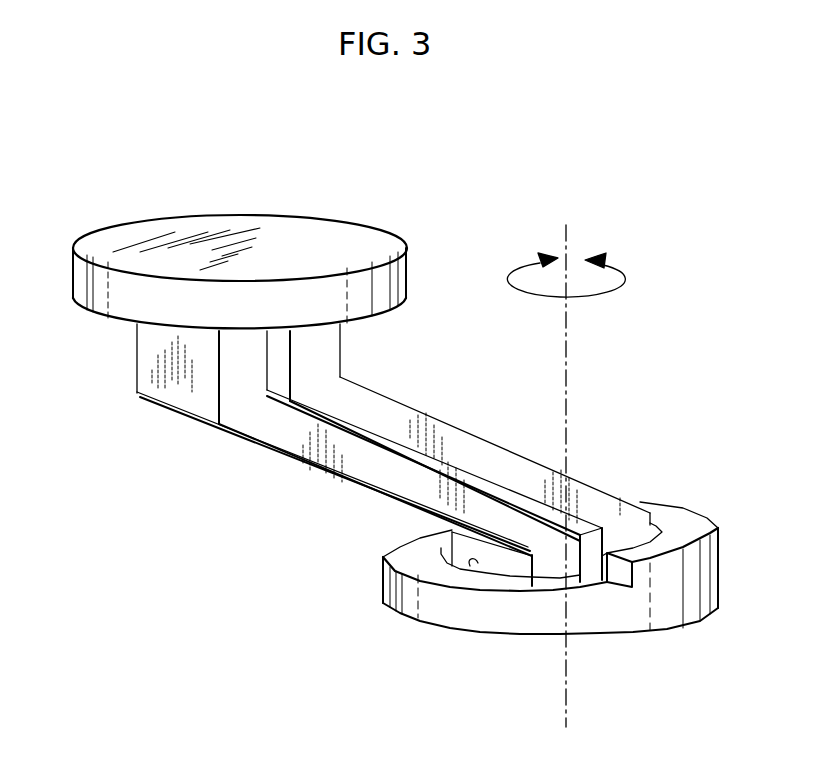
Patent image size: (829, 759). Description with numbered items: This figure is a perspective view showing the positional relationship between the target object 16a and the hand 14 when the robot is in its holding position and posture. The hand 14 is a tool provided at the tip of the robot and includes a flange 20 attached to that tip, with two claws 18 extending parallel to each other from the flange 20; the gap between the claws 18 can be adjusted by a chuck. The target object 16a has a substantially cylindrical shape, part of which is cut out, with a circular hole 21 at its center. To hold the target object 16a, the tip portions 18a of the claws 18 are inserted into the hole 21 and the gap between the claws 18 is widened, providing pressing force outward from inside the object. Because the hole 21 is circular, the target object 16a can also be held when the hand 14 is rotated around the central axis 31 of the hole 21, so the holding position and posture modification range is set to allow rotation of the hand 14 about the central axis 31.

The hand 14 is at (464, 288).
The flange 20 is at (356, 249).
The claws 18 is at (487, 440).
The tip portions 18a is at (632, 533).
The target object 16a is at (703, 527).
The hole 21 is at (478, 563).
The central axis 31 is at (567, 320).